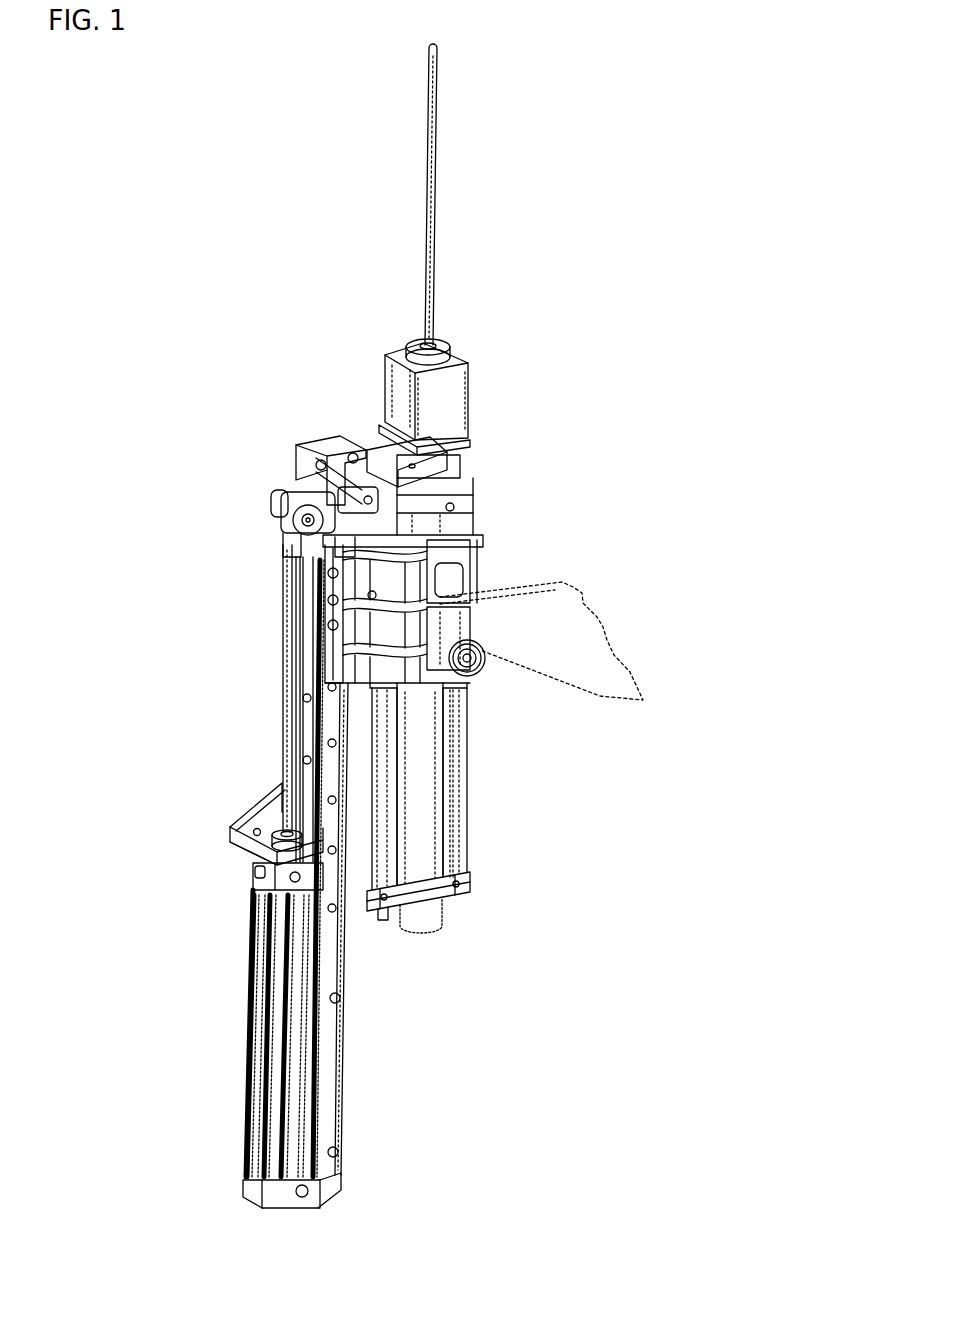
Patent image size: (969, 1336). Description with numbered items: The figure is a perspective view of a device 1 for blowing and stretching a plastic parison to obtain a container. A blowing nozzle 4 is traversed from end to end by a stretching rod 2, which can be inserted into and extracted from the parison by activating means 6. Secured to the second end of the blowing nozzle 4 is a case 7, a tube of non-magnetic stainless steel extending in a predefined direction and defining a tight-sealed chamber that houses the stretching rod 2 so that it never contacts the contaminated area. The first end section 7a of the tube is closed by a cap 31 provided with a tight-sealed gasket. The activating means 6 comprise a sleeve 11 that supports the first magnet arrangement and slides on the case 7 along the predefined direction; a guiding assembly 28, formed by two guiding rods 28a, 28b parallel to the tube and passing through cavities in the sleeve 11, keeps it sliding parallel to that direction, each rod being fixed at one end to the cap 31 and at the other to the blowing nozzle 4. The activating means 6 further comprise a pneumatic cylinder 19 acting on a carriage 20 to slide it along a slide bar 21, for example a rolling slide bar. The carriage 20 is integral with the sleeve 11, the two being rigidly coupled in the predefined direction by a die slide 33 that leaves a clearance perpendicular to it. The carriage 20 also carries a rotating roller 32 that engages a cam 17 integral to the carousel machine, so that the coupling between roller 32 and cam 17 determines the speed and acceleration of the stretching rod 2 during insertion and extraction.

The device for blowing and stretching a plastic parison 1 is at (638, 251).
The stretching rod 2 is at (433, 118).
The blowing nozzle 4 is at (486, 346).
The activating means 6 is at (192, 833).
The case 7 is at (418, 850).
The first end section 7a is at (467, 914).
The sleeve 11 is at (478, 523).
The cam 17 is at (560, 637).
The pneumatic cylinder 19 is at (250, 1012).
The carriage 20 is at (326, 592).
The slide bar 21 is at (278, 678).
The guiding assembly 28 is at (418, 789).
The guiding rod 28a is at (383, 726).
The guiding rod 28b is at (460, 817).
The cap 31 is at (421, 942).
The roller 32 is at (473, 660).
The die slide 33 is at (448, 582).